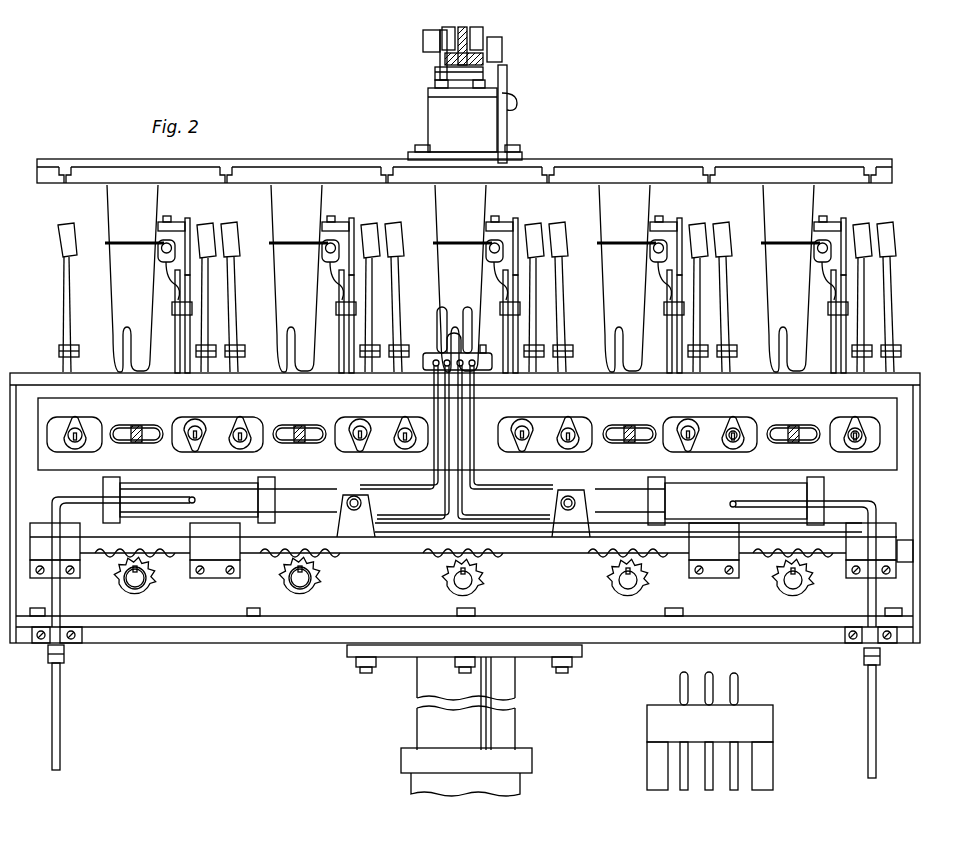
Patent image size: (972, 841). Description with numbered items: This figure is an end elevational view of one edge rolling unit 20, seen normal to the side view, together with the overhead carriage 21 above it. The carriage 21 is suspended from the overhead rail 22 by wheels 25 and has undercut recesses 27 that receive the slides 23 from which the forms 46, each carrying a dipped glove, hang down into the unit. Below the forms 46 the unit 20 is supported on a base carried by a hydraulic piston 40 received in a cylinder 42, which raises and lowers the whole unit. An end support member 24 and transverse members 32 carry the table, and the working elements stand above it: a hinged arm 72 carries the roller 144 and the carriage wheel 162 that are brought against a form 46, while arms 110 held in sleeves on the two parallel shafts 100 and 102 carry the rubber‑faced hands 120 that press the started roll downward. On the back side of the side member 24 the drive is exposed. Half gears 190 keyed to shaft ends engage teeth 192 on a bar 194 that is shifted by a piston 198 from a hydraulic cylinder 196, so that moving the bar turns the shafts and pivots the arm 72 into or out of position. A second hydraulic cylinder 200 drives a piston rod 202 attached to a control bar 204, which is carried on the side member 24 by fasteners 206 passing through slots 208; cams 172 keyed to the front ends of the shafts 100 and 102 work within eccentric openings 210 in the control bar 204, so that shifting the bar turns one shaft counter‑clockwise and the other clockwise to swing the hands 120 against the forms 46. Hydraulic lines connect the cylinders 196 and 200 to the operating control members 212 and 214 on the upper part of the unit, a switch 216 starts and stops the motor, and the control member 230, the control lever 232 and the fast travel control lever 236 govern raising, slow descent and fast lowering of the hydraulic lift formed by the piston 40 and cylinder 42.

The edge rolling unit 20 is at (917, 335).
The carriage 21 is at (258, 159).
The overhead rail 22 is at (476, 61).
The slide 23 is at (301, 172).
The end support member 24 is at (910, 497).
The wheel 25 is at (478, 42).
The undercut recess 27 is at (350, 167).
The transverse member 32 is at (126, 581).
The hydraulic piston 40 is at (507, 724).
The cylinder 42 is at (515, 790).
The form 46 is at (315, 278).
The arm 72 is at (547, 321).
The shaft 100 is at (851, 428).
The shaft 102 is at (735, 446).
The arm 110 is at (565, 297).
The hand 120 is at (572, 281).
The roller 144 is at (477, 258).
The carriage wheel 162 is at (482, 233).
The cam 172 is at (746, 432).
The half gear 190 is at (157, 578).
The teeth 192 is at (331, 558).
The bar 194 is at (540, 549).
The hydraulic cylinder 196 is at (146, 560).
The piston 198 is at (326, 500).
The hydraulic cylinder 200 is at (774, 562).
The piston rod 202 is at (612, 500).
The control bar 204 is at (878, 407).
The fastener 206 is at (631, 430).
The slot 208 is at (642, 433).
The eccentric opening 210 is at (745, 422).
The operating control member 212 is at (440, 320).
The operating control member 214 is at (467, 310).
The switch 216 is at (483, 355).
The control member 230 is at (682, 677).
The control lever 232 is at (710, 677).
The fast travel control lever 236 is at (738, 692).